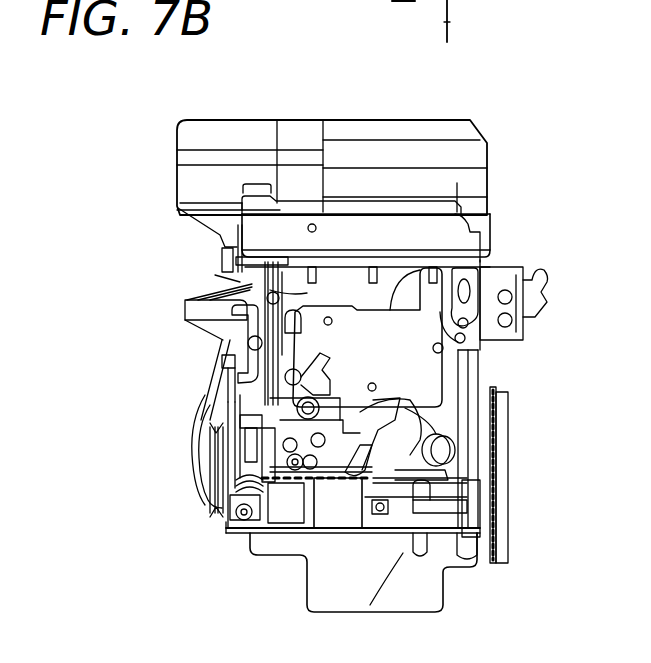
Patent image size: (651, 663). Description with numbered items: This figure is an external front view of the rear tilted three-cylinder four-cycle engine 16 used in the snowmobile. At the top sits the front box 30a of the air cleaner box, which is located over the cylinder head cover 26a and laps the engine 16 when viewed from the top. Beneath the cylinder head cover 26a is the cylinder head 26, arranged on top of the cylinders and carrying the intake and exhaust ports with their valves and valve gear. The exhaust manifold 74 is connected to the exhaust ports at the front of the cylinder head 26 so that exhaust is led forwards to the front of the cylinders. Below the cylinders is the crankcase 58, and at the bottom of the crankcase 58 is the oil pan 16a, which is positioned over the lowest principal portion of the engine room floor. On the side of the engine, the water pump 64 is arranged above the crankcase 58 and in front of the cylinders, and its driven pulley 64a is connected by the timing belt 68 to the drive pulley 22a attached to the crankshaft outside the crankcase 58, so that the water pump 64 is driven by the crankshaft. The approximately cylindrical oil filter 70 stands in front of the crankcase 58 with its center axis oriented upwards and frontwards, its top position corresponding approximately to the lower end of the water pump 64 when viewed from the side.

The front box 30a is at (192, 142).
The cylinder head cover 26a is at (267, 237).
The cylinder head 26 is at (237, 290).
The four-cycle engine 16 is at (490, 253).
The exhaust manifold 74 is at (407, 410).
The crankcase 58 is at (447, 433).
The driven pulley 64a is at (225, 365).
The water pump 64 is at (247, 397).
The timing belt 68 is at (220, 413).
The drive pulley 22a is at (222, 472).
The oil filter 70 is at (330, 513).
The oil pan 16a is at (330, 573).